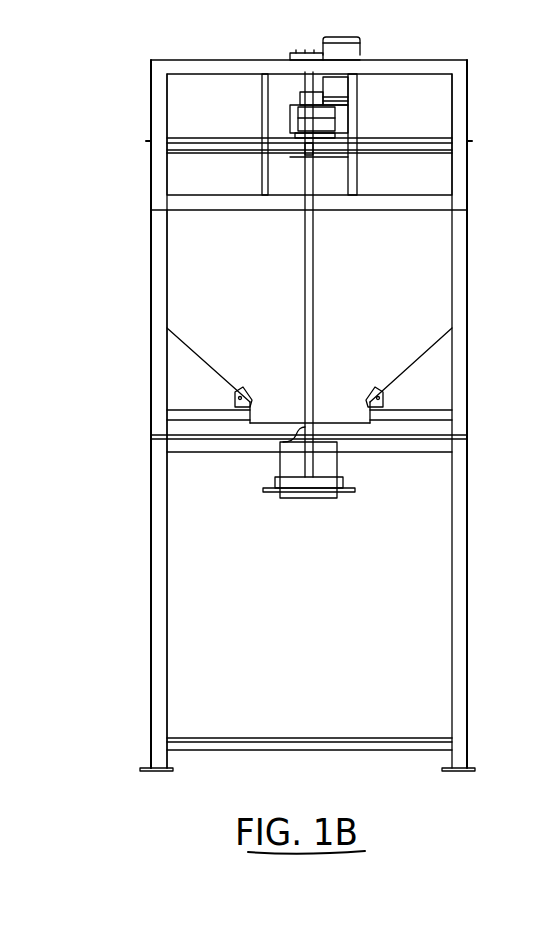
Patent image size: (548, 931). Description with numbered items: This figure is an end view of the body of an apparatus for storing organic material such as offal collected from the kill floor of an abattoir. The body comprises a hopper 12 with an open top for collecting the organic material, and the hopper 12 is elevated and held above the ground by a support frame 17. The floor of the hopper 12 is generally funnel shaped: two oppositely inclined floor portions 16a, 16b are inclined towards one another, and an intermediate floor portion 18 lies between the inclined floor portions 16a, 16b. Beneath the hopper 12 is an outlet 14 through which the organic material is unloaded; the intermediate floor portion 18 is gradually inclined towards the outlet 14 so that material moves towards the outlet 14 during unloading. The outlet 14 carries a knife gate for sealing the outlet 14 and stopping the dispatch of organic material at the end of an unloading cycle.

The hopper 12 is at (430, 273).
The outlet 14 is at (328, 462).
The inclined floor portion 16a is at (202, 357).
The inclined floor portion 16b is at (407, 365).
The support frame 17 is at (155, 578).
The intermediate floor portion 18 is at (267, 410).